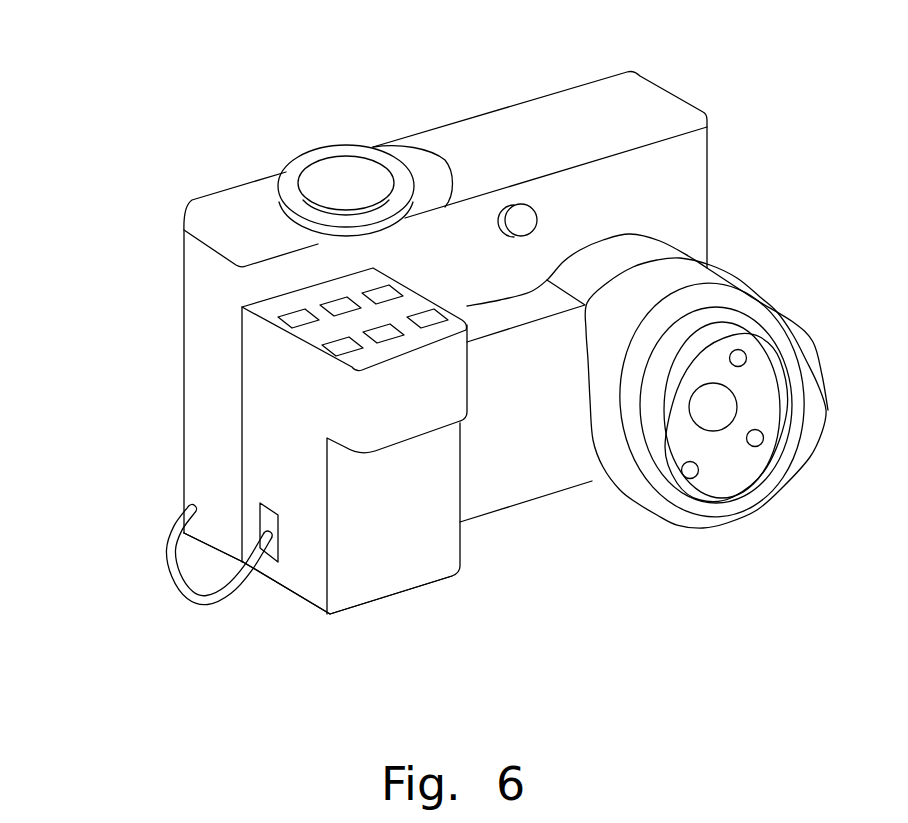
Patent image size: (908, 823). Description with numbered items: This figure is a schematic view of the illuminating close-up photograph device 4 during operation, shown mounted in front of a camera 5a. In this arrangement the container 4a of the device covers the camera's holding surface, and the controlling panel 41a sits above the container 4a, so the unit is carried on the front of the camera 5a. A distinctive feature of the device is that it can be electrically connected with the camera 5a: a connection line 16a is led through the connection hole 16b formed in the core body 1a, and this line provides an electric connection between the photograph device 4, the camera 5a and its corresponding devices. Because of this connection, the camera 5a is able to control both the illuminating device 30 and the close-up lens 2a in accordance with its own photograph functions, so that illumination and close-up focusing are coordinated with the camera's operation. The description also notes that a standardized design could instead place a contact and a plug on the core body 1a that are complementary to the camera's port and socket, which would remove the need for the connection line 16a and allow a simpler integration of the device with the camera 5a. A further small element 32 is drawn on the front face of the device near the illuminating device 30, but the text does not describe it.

The camera 5a is at (417, 108).
The controlling panel 41a is at (317, 335).
The connection line 16a is at (170, 592).
The connection hole 16b is at (275, 552).
The illuminating close-up photograph device 4 is at (263, 648).
The container 4a is at (528, 530).
The core body 1a is at (619, 516).
The illuminating device 30 is at (732, 463).
The screw hole 32 is at (758, 436).
The close-up lens 2a is at (724, 419).